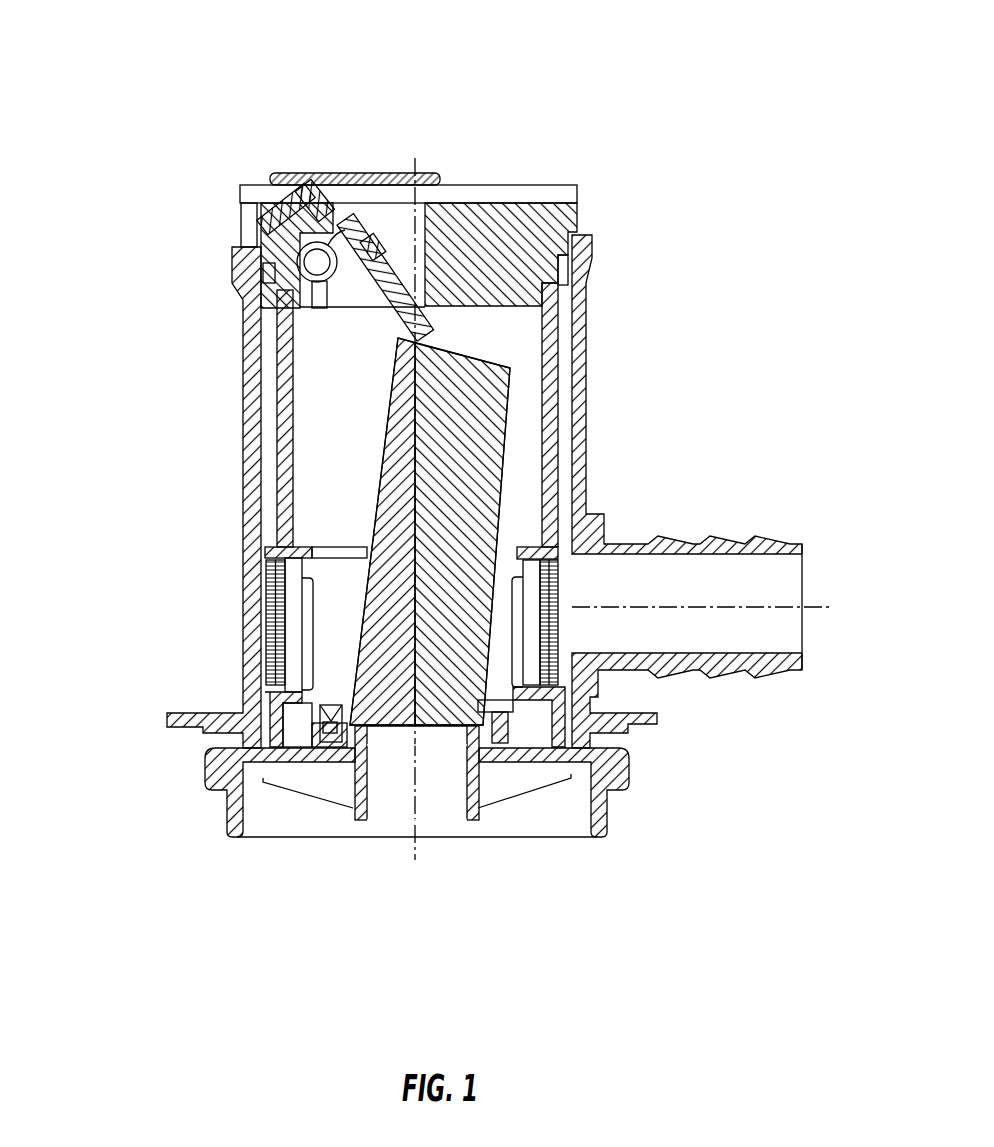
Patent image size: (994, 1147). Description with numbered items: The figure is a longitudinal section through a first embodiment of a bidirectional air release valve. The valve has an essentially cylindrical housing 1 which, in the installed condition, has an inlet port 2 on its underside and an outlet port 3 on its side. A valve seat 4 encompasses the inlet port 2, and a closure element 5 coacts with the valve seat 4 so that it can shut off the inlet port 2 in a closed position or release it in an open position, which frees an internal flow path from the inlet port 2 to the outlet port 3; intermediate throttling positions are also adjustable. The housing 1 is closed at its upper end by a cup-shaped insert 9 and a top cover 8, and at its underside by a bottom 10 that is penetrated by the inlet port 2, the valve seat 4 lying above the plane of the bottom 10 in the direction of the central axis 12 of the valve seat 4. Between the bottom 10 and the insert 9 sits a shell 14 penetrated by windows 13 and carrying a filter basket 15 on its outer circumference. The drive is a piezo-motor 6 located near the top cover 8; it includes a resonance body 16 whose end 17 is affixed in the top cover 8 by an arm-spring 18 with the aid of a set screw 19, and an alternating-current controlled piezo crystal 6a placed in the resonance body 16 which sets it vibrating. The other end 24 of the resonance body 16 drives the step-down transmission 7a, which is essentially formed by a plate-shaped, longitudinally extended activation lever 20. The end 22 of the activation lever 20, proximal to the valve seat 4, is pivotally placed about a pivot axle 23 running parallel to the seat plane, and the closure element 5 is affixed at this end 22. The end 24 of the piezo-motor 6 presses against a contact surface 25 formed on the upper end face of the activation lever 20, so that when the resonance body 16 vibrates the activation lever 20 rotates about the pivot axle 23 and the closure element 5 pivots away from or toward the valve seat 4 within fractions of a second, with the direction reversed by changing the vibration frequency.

The housing 1 is at (590, 337).
The inlet port 2 is at (387, 805).
The outlet port 3 is at (783, 583).
The valve seat 4 is at (467, 727).
The closure element 5 is at (410, 735).
The piezo-motor 6 is at (348, 220).
The piezo crystal 6a is at (385, 236).
The step-down transmission 7a is at (380, 460).
The top cover 8 is at (478, 247).
The insert 9 is at (550, 313).
The bottom 10 is at (243, 800).
The central axis 12 is at (422, 450).
The windows 13 is at (300, 627).
The shell 14 is at (333, 640).
The filter basket 15 is at (563, 586).
The resonance body 16 is at (395, 232).
The end of the resonance body 17 is at (338, 200).
The arm-spring 18 is at (305, 300).
The set screw 19 is at (300, 180).
The activation lever 20 is at (466, 524).
The end of the activation lever 22 is at (530, 753).
The pivot axle 23 is at (333, 728).
The end of the resonance body 24 is at (575, 205).
The contact surface 25 is at (583, 233).